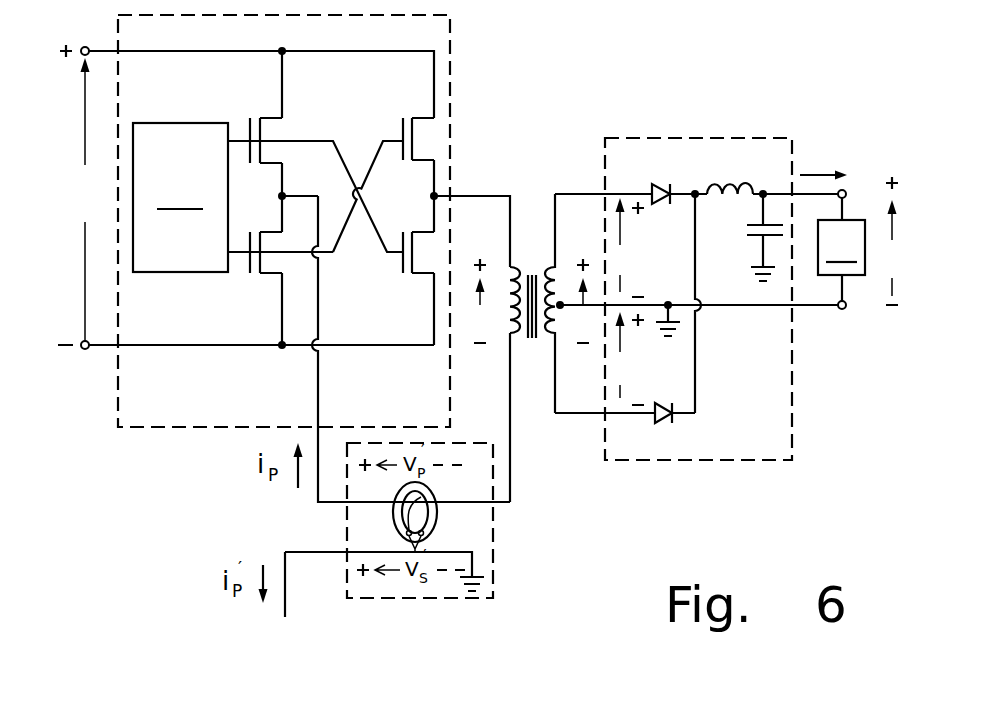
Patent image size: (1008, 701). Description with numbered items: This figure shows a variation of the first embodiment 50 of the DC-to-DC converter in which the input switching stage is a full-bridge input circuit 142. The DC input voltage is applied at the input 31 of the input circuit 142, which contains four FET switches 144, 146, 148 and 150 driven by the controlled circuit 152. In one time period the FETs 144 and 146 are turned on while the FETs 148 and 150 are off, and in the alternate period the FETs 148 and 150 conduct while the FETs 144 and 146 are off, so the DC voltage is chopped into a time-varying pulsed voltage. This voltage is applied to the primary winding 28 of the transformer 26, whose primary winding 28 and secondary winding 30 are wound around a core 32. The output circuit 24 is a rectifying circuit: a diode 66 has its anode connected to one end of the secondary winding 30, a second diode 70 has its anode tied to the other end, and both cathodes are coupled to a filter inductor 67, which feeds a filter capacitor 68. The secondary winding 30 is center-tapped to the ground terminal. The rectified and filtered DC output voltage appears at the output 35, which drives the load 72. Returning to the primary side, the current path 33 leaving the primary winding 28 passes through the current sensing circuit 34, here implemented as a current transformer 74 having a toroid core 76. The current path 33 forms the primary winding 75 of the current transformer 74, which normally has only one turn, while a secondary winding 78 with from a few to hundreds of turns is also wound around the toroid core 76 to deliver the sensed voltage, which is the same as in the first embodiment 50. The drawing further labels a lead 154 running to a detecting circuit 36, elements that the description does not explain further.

The input 31 is at (58, 70).
The input circuit 142 is at (460, 68).
The FET switch 144 is at (430, 119).
The FET switch 146 is at (280, 275).
The FET switch 148 is at (422, 275).
The FET switch 150 is at (312, 108).
The controlled circuit 152 is at (180, 197).
The transformer 26 is at (533, 270).
The primary winding 28 is at (508, 282).
The secondary winding 30 is at (553, 280).
The core 32 is at (533, 340).
The current path 33 is at (513, 427).
The current sensing circuit 34 is at (505, 590).
The output circuit 24 is at (696, 277).
The diode 66 is at (655, 185).
The filter inductor 67 is at (735, 185).
The filter capacitor 68 is at (747, 222).
The diode 70 is at (657, 422).
The load 72 is at (841, 249).
The output 35 is at (860, 204).
The first embodiment 50 is at (833, 97).
The current transformer 74 is at (480, 510).
The primary winding 75 is at (405, 508).
The toroid core 76 is at (438, 495).
The secondary winding 78 is at (428, 542).
The lead to detecting circuit 154 is at (386, 626).
The detecting circuit 36 is at (282, 665).